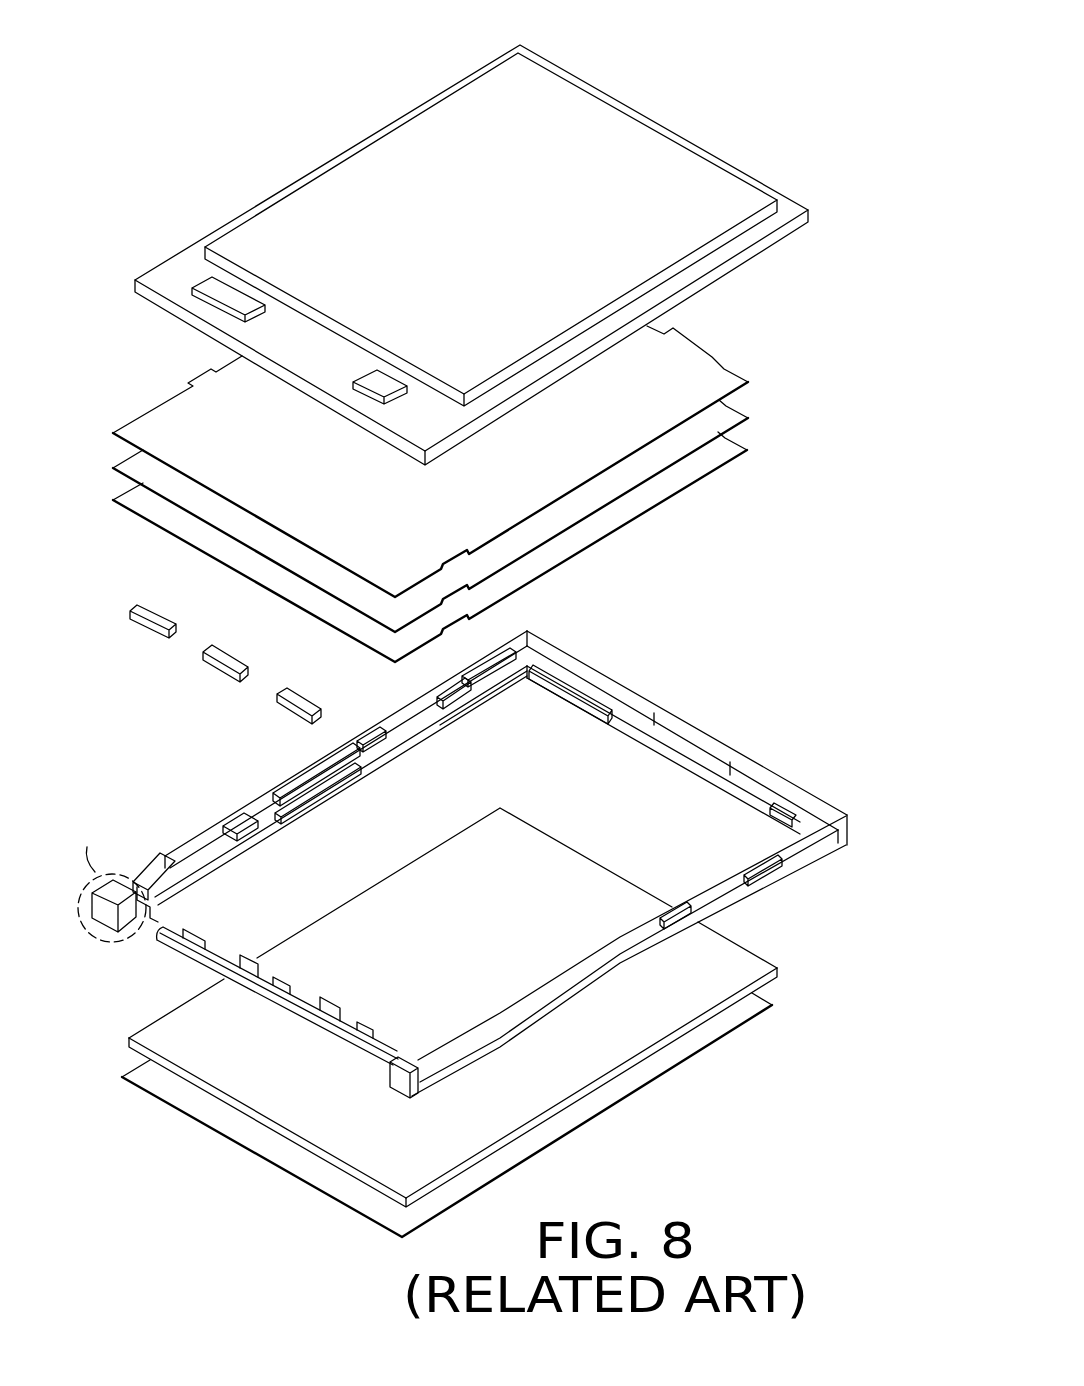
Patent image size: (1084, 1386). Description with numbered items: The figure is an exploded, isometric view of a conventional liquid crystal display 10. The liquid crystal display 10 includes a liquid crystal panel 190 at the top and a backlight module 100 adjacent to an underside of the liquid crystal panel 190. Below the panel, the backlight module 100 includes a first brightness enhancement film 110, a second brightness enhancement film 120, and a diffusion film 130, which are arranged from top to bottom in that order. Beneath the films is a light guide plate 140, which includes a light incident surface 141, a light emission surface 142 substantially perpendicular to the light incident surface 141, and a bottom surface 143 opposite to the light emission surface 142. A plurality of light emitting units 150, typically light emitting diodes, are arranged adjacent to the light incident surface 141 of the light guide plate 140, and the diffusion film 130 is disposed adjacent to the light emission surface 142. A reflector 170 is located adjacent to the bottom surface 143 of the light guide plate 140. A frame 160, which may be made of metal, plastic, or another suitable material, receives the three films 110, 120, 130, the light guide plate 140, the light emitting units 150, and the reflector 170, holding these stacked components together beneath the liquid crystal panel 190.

The liquid crystal display 10 is at (492, 21).
The backlight module 100 is at (849, 333).
The first brightness enhancement film 110 is at (714, 386).
The second brightness enhancement film 120 is at (722, 418).
The diffusion film 130 is at (723, 455).
The light guide plate 140 is at (463, 1007).
The light incident surface 141 is at (249, 1112).
The light emission surface 142 is at (200, 1005).
The bottom surface 143 is at (265, 1137).
The light emitting units 150 is at (227, 662).
The frame 160 is at (680, 742).
The reflector 170 is at (746, 1004).
The liquid crystal panel 190 is at (692, 181).